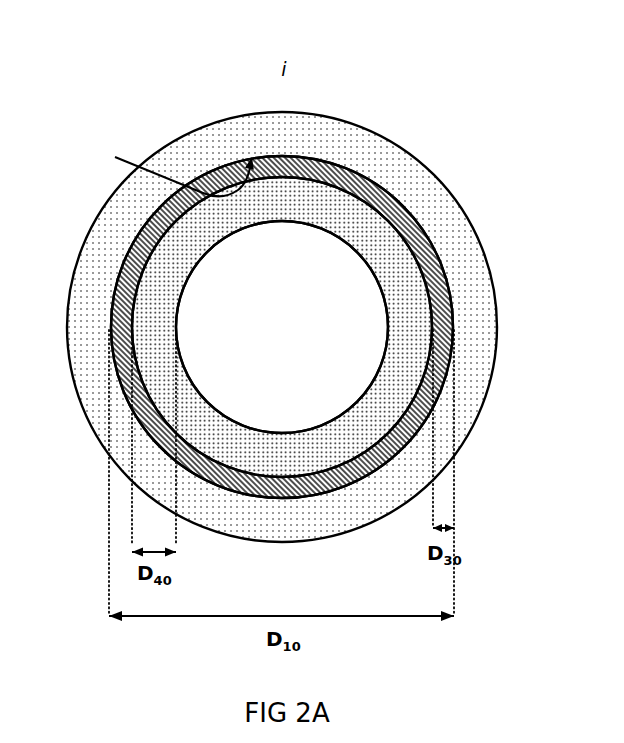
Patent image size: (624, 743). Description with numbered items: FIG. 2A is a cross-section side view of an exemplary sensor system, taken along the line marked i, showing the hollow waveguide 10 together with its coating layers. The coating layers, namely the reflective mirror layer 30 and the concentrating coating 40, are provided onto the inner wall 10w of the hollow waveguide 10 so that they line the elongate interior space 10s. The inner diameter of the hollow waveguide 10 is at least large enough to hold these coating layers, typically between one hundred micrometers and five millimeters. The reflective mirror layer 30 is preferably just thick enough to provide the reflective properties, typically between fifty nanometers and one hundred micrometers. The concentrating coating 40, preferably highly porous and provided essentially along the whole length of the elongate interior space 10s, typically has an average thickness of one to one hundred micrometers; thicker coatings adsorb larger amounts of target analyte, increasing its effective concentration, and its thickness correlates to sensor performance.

The hollow waveguide 10 is at (343, 142).
The reflective mirror layer 30 is at (367, 185).
The concentrating coating 40 is at (378, 238).
The elongate interior space 10s is at (353, 343).
The inner wall 10w is at (162, 170).